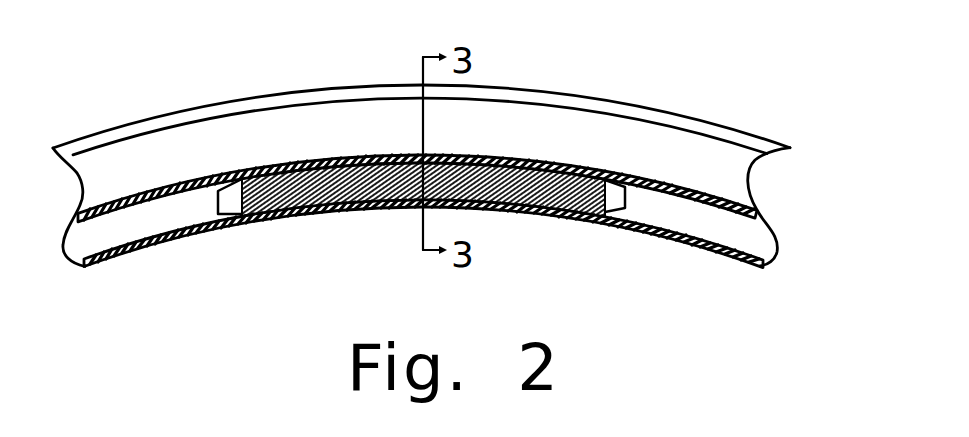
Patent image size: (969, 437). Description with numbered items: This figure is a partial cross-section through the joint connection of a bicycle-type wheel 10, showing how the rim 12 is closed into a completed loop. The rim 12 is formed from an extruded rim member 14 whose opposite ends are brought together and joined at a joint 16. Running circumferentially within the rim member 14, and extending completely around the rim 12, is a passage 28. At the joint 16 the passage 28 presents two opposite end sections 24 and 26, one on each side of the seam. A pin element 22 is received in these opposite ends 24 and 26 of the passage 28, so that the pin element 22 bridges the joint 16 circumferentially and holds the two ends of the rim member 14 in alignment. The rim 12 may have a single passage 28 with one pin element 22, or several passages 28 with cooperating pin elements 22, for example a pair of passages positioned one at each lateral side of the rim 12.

The wheel 10 is at (727, 118).
The rim 12 is at (775, 144).
The rim member 14 is at (138, 122).
The joint 16 is at (430, 116).
The pin element 22 is at (303, 213).
The end of passage 24 is at (205, 220).
The end of passage 26 is at (680, 216).
The passage 28 is at (748, 235).